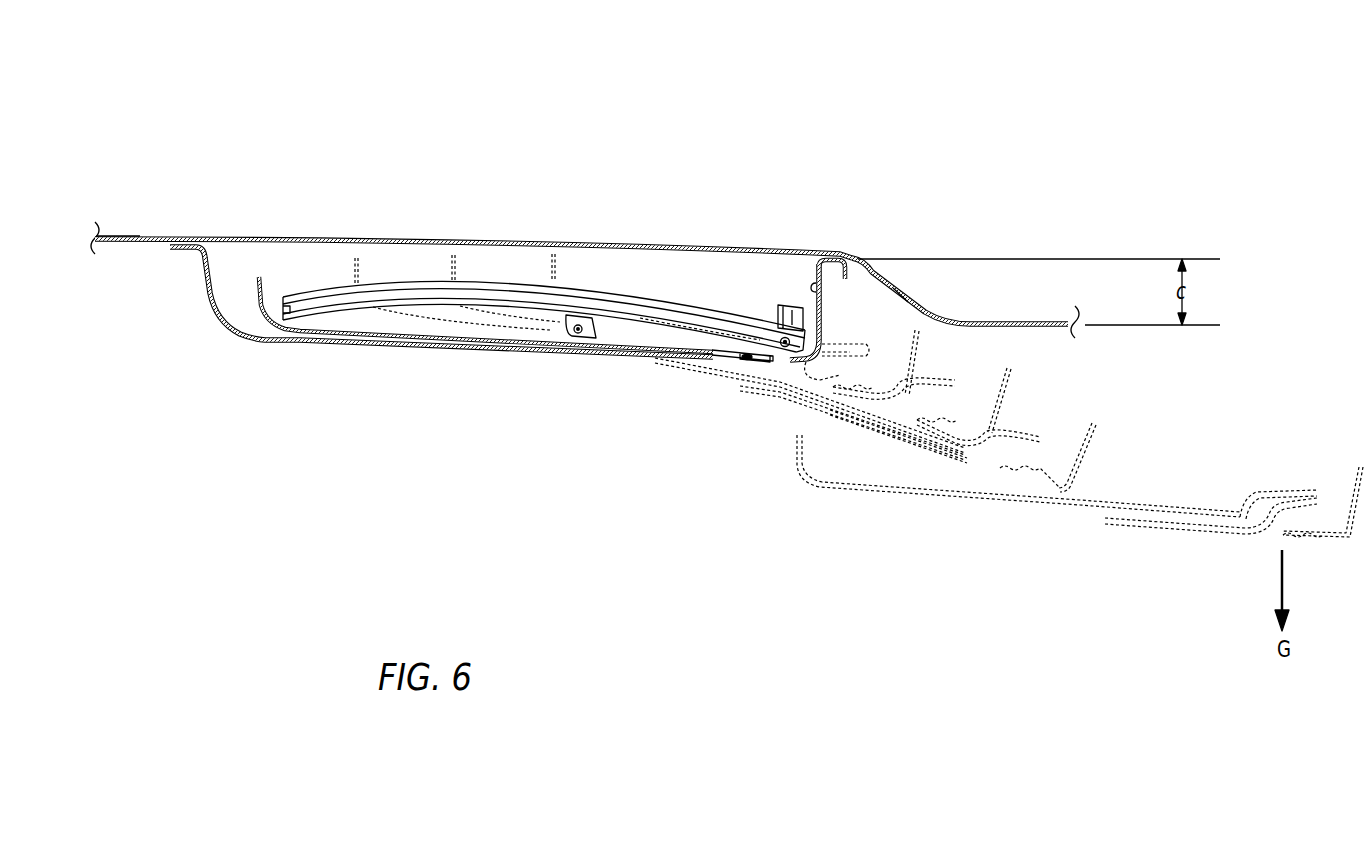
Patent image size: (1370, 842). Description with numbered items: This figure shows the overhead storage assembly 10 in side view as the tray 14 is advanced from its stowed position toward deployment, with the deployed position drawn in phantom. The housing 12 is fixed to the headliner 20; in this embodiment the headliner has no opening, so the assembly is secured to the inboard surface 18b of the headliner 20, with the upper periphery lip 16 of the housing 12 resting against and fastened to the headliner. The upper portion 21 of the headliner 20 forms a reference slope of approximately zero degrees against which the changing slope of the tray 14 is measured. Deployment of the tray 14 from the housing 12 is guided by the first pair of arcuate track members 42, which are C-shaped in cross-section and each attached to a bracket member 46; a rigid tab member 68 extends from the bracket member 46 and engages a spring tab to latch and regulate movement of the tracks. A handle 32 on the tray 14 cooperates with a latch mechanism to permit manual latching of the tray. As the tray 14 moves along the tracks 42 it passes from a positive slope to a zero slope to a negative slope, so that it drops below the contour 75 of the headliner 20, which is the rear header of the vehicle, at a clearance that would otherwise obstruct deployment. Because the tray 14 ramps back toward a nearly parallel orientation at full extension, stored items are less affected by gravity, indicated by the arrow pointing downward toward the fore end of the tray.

The overhead storage assembly 10 is at (1116, 94).
The upper portion of the headliner 21 is at (498, 234).
The inboard surface of the headliner 18b is at (133, 243).
The upper periphery lip 16 is at (190, 251).
The housing 12 is at (214, 310).
The tray 14 is at (258, 305).
The first pair of arcuate track members 42 is at (447, 296).
The bracket member 46 is at (621, 328).
The handle 32 is at (750, 363).
The rigid tab member 68 is at (794, 296).
The headliner 20 is at (902, 290).
The contour of the headliner 75 is at (902, 299).